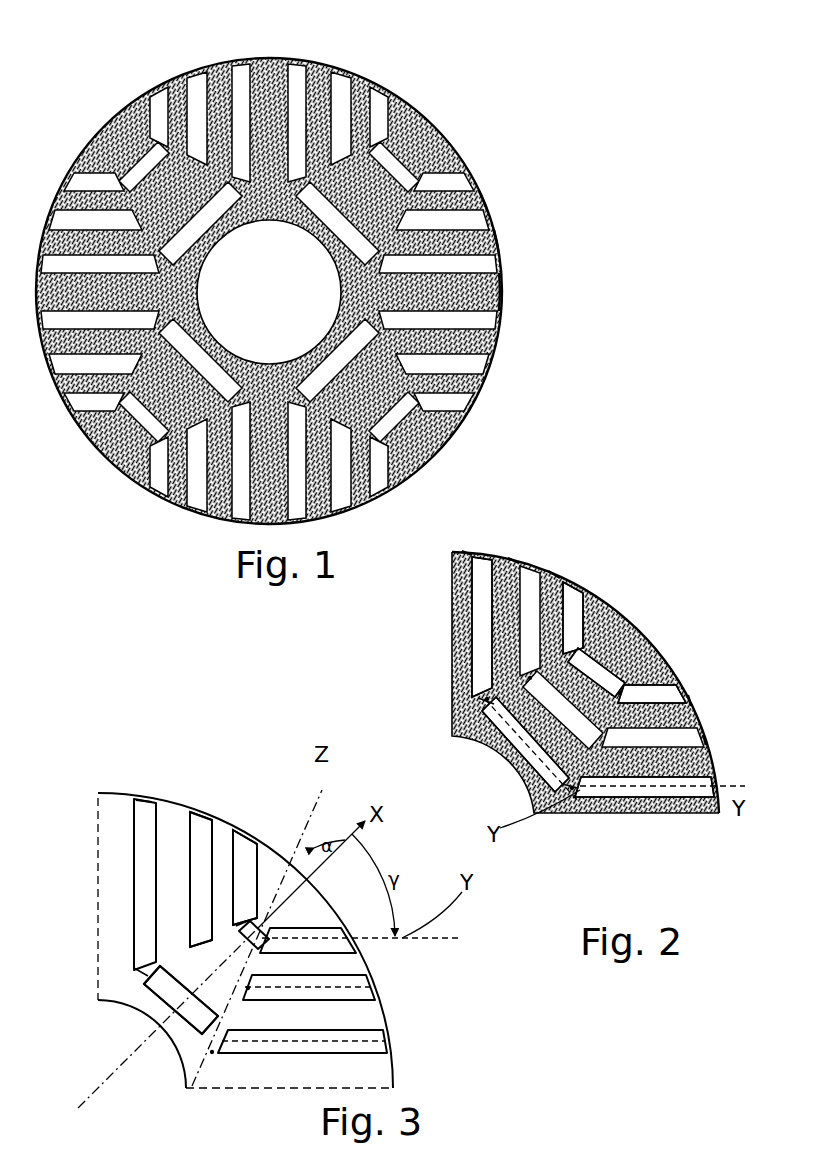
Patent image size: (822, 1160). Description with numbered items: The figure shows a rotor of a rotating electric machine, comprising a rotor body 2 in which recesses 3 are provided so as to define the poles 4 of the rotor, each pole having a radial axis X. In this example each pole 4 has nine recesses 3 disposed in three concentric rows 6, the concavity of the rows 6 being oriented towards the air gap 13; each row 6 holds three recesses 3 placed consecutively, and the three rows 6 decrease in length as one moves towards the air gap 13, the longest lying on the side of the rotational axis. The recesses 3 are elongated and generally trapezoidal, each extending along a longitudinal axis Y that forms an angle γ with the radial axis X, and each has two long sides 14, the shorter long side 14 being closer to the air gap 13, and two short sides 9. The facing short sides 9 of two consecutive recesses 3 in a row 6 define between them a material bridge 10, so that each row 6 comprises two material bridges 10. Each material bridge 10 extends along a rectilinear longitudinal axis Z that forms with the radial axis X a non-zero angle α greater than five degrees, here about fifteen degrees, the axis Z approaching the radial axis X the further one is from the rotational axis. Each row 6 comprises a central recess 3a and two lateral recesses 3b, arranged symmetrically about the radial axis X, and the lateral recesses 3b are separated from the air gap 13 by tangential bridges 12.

In FIG. 1, the rotor body 2 is at (366, 80).
In FIG. 2, the rotor body 2 is at (691, 817).
In FIG. 1, the recesses 3 is at (290, 92).
In FIG. 2, the recesses 3 is at (585, 600).
In FIG. 3, the recesses 3 is at (140, 838).
In FIG. 2, the central recess 3a is at (600, 662).
In FIG. 3, the central recess 3a is at (150, 1004).
In FIG. 1, the lateral recesses 3b is at (480, 318).
In FIG. 2, the lateral recesses 3b is at (488, 625).
In FIG. 3, the lateral recesses 3b is at (200, 830).
In FIG. 1, the poles 4 is at (92, 138).
In FIG. 2, the poles 4 is at (656, 634).
In FIG. 3, the poles 4 is at (310, 908).
In FIG. 2, the rows 6 is at (466, 551).
In FIG. 2, the short sides 9 is at (598, 792).
In FIG. 3, the short sides 9 is at (275, 987).
In FIG. 2, the material bridge 10 is at (620, 693).
In FIG. 3, the material bridge 10 is at (248, 988).
In FIG. 1, the tangential bridges 12 is at (482, 200).
In FIG. 2, the tangential bridges 12 is at (505, 556).
In FIG. 3, the tangential bridges 12 is at (144, 797).
In FIG. 1, the air gap 13 is at (150, 112).
In FIG. 2, the air gap 13 is at (585, 610).
In FIG. 2, the long sides 14 is at (566, 786).
In FIG. 3, the long sides 14 is at (136, 885).